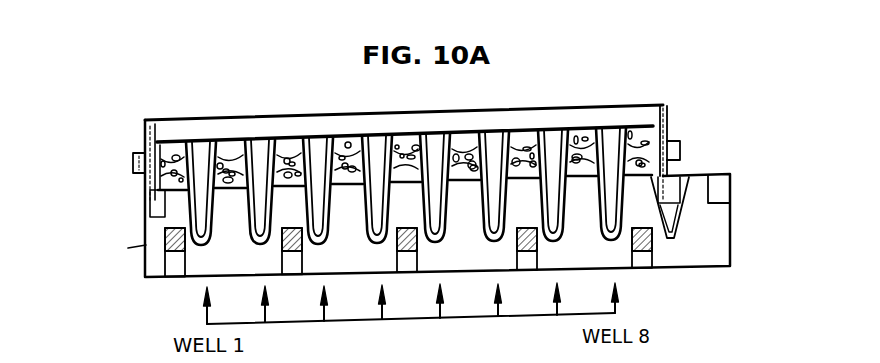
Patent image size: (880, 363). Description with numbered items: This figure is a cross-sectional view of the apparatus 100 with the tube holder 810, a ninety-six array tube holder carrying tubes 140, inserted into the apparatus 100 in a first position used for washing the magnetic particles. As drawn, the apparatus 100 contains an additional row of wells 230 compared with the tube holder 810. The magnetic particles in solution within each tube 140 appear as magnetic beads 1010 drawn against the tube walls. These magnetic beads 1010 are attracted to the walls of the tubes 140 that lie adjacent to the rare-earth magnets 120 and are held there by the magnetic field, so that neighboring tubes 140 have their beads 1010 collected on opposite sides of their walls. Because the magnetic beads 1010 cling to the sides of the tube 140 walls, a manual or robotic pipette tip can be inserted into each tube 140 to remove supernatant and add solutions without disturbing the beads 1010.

The apparatus 100 is at (731, 223).
The rare-earth magnets 120 is at (182, 277).
The tubes 140 is at (201, 150).
The wells 230 is at (672, 232).
The tube holder 810 is at (663, 130).
The magnetic beads 1010 is at (185, 224).